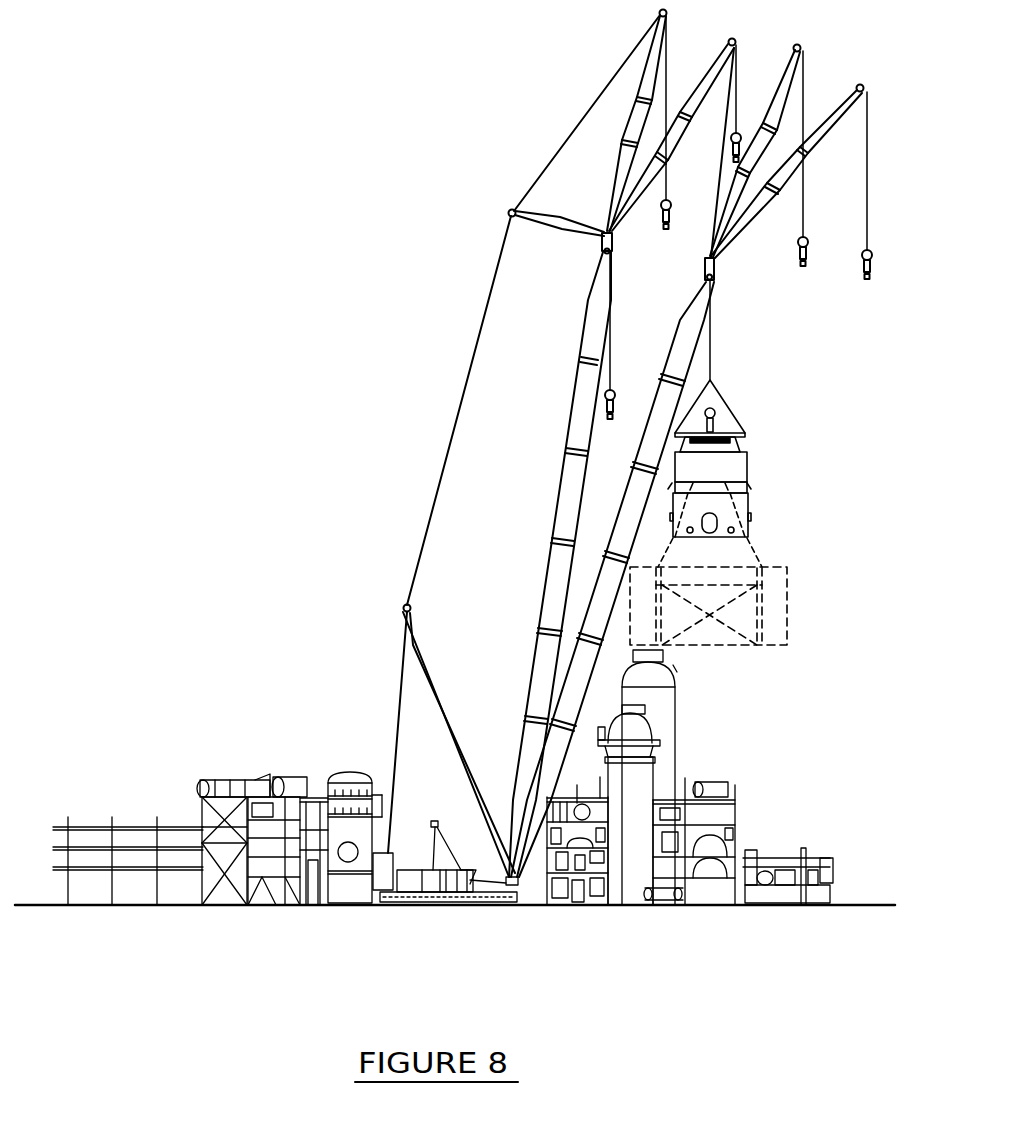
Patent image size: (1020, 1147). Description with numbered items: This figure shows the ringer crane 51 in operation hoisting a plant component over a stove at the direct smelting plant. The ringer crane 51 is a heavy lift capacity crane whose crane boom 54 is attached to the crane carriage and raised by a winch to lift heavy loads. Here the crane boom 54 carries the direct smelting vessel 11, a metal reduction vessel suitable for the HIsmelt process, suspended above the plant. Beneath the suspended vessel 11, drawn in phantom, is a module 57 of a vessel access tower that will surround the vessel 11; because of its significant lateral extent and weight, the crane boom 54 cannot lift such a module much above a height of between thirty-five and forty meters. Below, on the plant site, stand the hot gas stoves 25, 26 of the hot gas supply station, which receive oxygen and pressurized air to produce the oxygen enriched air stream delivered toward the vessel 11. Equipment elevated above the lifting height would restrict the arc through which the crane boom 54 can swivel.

The crane boom 54 is at (670, 348).
The direct smelting vessel 11 is at (766, 466).
The module 57 is at (792, 600).
The hot gas stove 25 is at (690, 699).
The hot gas stove 26 is at (623, 925).
The ringer crane 51 is at (445, 940).